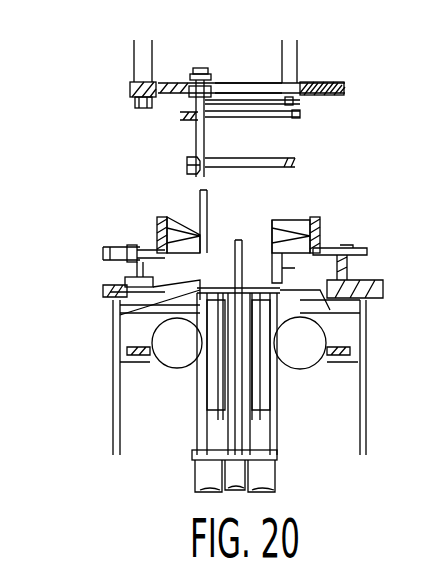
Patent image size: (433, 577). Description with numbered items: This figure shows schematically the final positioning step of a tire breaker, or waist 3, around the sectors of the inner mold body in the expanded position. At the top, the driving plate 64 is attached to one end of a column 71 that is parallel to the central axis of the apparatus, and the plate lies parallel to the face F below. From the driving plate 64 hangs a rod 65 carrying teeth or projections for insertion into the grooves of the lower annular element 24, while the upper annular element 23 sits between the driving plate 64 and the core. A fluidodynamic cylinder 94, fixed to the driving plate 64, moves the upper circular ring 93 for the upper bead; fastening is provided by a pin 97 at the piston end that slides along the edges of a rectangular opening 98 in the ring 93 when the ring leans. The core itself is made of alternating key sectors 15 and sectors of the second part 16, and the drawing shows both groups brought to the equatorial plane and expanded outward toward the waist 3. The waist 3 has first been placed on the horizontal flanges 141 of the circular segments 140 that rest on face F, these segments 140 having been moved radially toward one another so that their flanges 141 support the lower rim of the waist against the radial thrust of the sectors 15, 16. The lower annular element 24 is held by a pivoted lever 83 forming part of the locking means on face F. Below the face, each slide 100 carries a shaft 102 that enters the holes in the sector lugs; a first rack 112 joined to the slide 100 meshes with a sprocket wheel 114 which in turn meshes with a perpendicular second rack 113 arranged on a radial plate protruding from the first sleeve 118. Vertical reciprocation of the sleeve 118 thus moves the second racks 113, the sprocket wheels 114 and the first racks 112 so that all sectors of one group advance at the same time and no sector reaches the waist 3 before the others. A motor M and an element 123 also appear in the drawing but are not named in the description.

The column 71 is at (134, 61).
The fluidodynamic cylinder 94 is at (297, 63).
The driving plate 64 is at (343, 84).
The pin 97 is at (300, 101).
The upper circular ring 93 is at (300, 117).
The rod 65 is at (196, 140).
The rectangular opening 98 is at (290, 120).
The upper annular element 23 is at (298, 164).
The key sectors 15 is at (182, 213).
The motor M is at (160, 218).
The lower annular element 24 is at (137, 267).
The lever 83 is at (105, 297).
The slide 100 is at (160, 300).
The first rack 112 is at (112, 340).
The sprocket wheel 114 is at (170, 357).
The first sleeve 118 is at (217, 407).
The second rack 113 is at (270, 357).
The central rod 123 is at (252, 226).
The shaft 102 is at (275, 235).
The sectors of the second part 16 is at (307, 220).
The reinforcing annular structure 3 is at (313, 216).
The circular segment 140 is at (322, 223).
The horizontal flange 141 is at (348, 260).
The face F is at (370, 288).